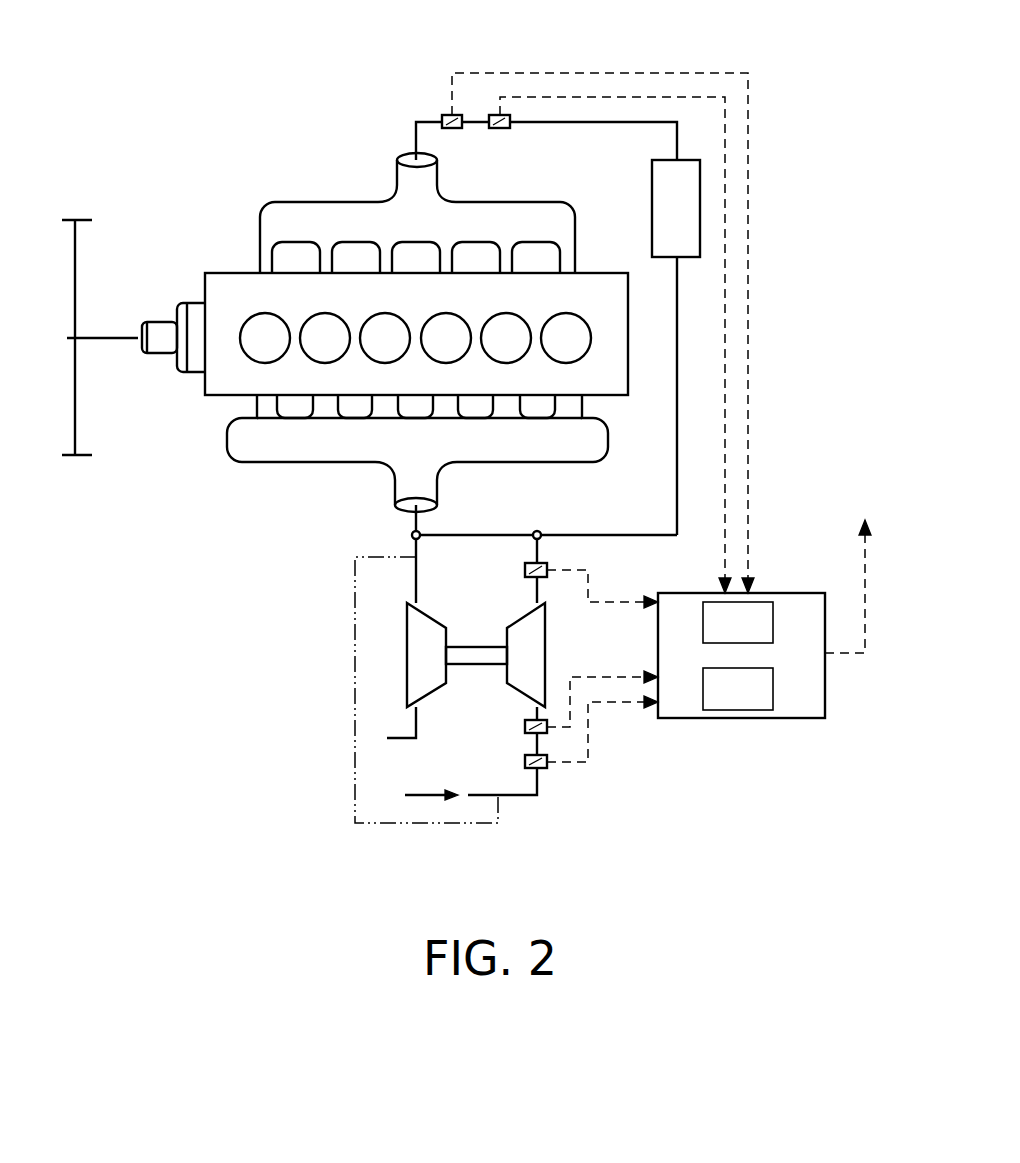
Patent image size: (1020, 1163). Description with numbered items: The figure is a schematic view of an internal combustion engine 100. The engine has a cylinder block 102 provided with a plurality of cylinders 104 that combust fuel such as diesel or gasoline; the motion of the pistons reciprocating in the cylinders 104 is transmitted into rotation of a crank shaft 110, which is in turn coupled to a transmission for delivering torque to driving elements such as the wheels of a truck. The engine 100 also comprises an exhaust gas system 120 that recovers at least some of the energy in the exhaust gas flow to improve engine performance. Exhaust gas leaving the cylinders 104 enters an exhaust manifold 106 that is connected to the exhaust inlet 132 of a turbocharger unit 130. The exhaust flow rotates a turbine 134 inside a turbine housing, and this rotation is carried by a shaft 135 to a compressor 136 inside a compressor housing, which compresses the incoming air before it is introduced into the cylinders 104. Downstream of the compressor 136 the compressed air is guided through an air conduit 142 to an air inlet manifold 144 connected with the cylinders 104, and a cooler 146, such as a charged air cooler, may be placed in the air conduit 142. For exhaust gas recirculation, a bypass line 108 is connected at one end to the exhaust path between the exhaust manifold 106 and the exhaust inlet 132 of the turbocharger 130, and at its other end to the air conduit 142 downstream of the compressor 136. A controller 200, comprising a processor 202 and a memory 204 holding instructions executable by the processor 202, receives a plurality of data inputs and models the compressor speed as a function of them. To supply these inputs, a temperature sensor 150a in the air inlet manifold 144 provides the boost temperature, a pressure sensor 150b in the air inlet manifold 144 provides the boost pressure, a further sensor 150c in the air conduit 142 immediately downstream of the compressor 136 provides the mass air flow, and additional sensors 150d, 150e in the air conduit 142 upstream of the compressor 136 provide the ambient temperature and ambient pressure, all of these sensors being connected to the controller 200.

The internal combustion engine 100 is at (225, 258).
The cylinder block 102 is at (628, 337).
The cylinders 104 is at (577, 293).
The exhaust manifold 106 is at (268, 440).
The bypass line 108 is at (493, 533).
The crank shaft 110 is at (123, 337).
The exhaust gas system 120 is at (826, 453).
The turbocharger unit 130 is at (336, 699).
The exhaust inlet 132 is at (415, 580).
The turbine 134 is at (407, 653).
The shaft 135 is at (471, 665).
The compressor 136 is at (547, 653).
The air conduit 142 is at (677, 378).
The air inlet manifold 144 is at (330, 228).
The cooler 146 is at (678, 212).
The temperature sensor 150a is at (442, 115).
The pressure sensor 150b is at (489, 115).
The sensor 150c is at (525, 570).
The sensor 150d is at (549, 730).
The sensor 150e is at (546, 770).
The controller 200 is at (740, 718).
The processor 202 is at (738, 622).
The memory 204 is at (738, 689).